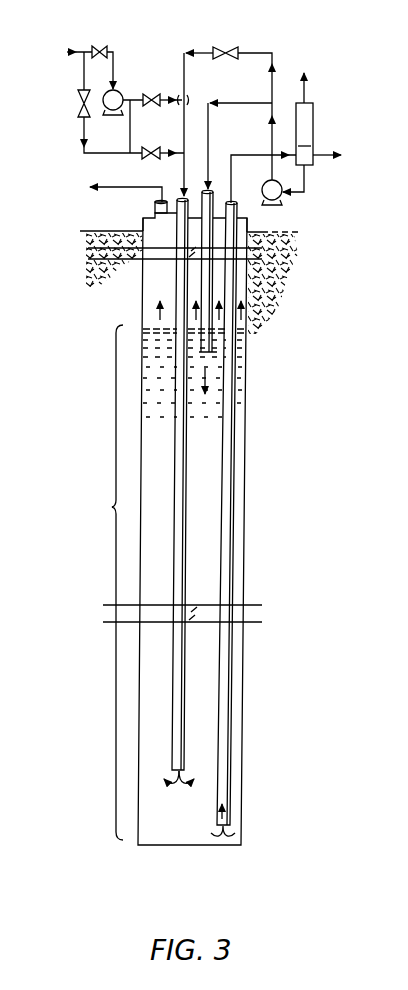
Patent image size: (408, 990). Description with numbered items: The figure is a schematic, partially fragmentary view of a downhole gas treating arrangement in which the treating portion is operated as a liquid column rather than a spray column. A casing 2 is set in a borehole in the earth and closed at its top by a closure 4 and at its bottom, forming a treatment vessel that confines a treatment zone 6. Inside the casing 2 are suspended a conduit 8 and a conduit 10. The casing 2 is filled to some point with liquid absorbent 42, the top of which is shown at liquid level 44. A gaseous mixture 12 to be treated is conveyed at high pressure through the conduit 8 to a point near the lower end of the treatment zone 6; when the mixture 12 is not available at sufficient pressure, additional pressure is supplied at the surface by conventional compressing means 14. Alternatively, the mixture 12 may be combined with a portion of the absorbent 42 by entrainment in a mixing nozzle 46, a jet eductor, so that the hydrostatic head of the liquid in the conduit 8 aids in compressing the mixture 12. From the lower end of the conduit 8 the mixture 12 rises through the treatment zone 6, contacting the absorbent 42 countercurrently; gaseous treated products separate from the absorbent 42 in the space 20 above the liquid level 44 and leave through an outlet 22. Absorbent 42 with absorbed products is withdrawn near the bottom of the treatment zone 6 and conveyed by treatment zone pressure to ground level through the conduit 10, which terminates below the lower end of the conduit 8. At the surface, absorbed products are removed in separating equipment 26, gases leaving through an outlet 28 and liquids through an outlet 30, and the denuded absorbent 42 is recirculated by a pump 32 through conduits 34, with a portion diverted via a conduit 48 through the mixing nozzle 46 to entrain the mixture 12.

The casing 2 is at (243, 474).
The closure 4 is at (143, 220).
The treatment zone 6 is at (110, 582).
The conduit 8 is at (174, 667).
The conduit 10 is at (220, 704).
The mixture 12 is at (186, 769).
The compressing means 14 is at (120, 92).
The space 20 is at (150, 291).
The outlet 22 is at (155, 206).
The separating equipment 26 is at (304, 134).
The outlet 28 is at (304, 92).
The outlet 30 is at (326, 150).
The pump 32 is at (283, 197).
The conduits 34 is at (243, 106).
The liquid absorbent 42 is at (215, 472).
The liquid level 44 is at (151, 328).
The mixing nozzle 46 is at (188, 101).
The conduit 48 is at (253, 53).